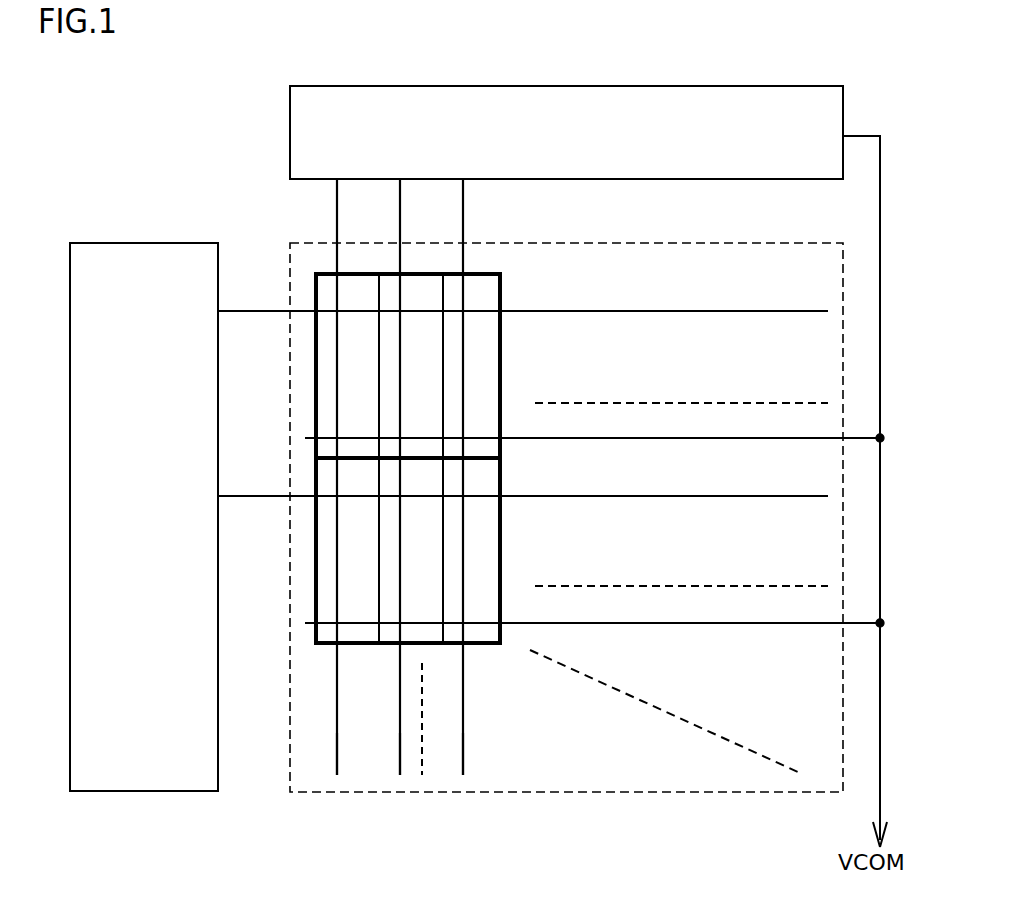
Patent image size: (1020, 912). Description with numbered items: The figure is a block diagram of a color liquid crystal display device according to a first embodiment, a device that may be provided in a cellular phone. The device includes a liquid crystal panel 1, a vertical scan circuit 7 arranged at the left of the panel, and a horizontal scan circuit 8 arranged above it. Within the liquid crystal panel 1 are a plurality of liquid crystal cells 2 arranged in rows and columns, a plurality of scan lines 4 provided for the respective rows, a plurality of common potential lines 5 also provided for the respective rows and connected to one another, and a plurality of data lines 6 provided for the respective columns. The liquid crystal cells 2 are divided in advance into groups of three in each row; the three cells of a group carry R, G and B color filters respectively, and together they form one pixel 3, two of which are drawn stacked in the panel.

The liquid crystal panel 1 is at (538, 796).
The liquid crystal cell 2 is at (483, 283).
The pixel 3 is at (503, 351).
The scan line 4 is at (682, 312).
The common potential line 5 is at (725, 437).
The data line 6 is at (463, 733).
The vertical scan circuit 7 is at (144, 243).
The horizontal scan circuit 8 is at (290, 133).